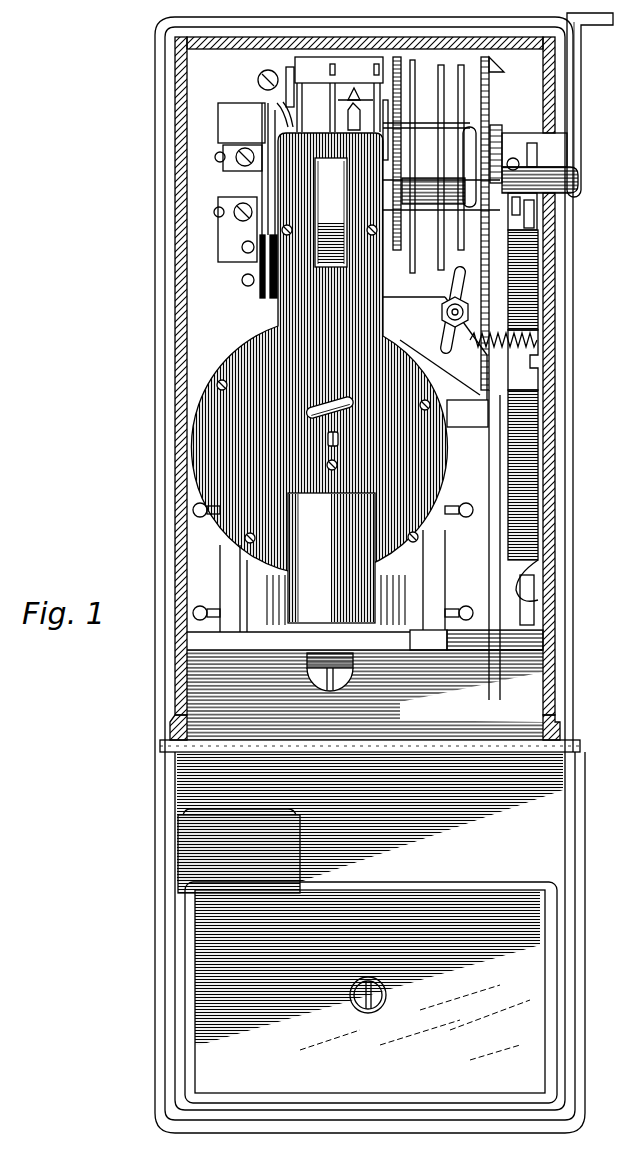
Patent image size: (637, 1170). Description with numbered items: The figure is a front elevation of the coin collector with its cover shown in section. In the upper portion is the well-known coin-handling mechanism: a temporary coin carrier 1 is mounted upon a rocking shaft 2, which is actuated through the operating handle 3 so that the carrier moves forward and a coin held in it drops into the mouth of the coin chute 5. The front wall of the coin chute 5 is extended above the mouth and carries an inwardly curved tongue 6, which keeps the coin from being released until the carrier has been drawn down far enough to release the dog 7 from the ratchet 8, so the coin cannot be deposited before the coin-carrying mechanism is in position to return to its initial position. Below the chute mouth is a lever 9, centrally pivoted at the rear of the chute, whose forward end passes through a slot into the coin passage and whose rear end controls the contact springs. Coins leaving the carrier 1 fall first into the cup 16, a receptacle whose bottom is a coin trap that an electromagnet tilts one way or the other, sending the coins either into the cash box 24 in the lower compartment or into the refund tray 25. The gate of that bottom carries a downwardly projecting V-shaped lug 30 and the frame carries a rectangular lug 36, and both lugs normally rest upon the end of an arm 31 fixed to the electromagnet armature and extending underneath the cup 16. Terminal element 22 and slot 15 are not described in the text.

The temporary coin carrier 1 is at (336, 93).
The rocking shaft 2 is at (472, 150).
The operating handle 3 is at (579, 104).
The coin chute 5 is at (319, 378).
The inwardly curved tongue 6 is at (331, 212).
The dog 7 is at (547, 213).
The ratchet 8 is at (560, 172).
The lever 9 is at (340, 439).
The slot 15 is at (318, 403).
The cup 16 is at (331, 558).
The terminal block 22 is at (270, 122).
The cash box 24 is at (370, 927).
The refund tray 25 is at (222, 826).
The V-shaped lug 30 is at (352, 658).
The arm 31 is at (336, 684).
The rectangular lug 36 is at (318, 668).